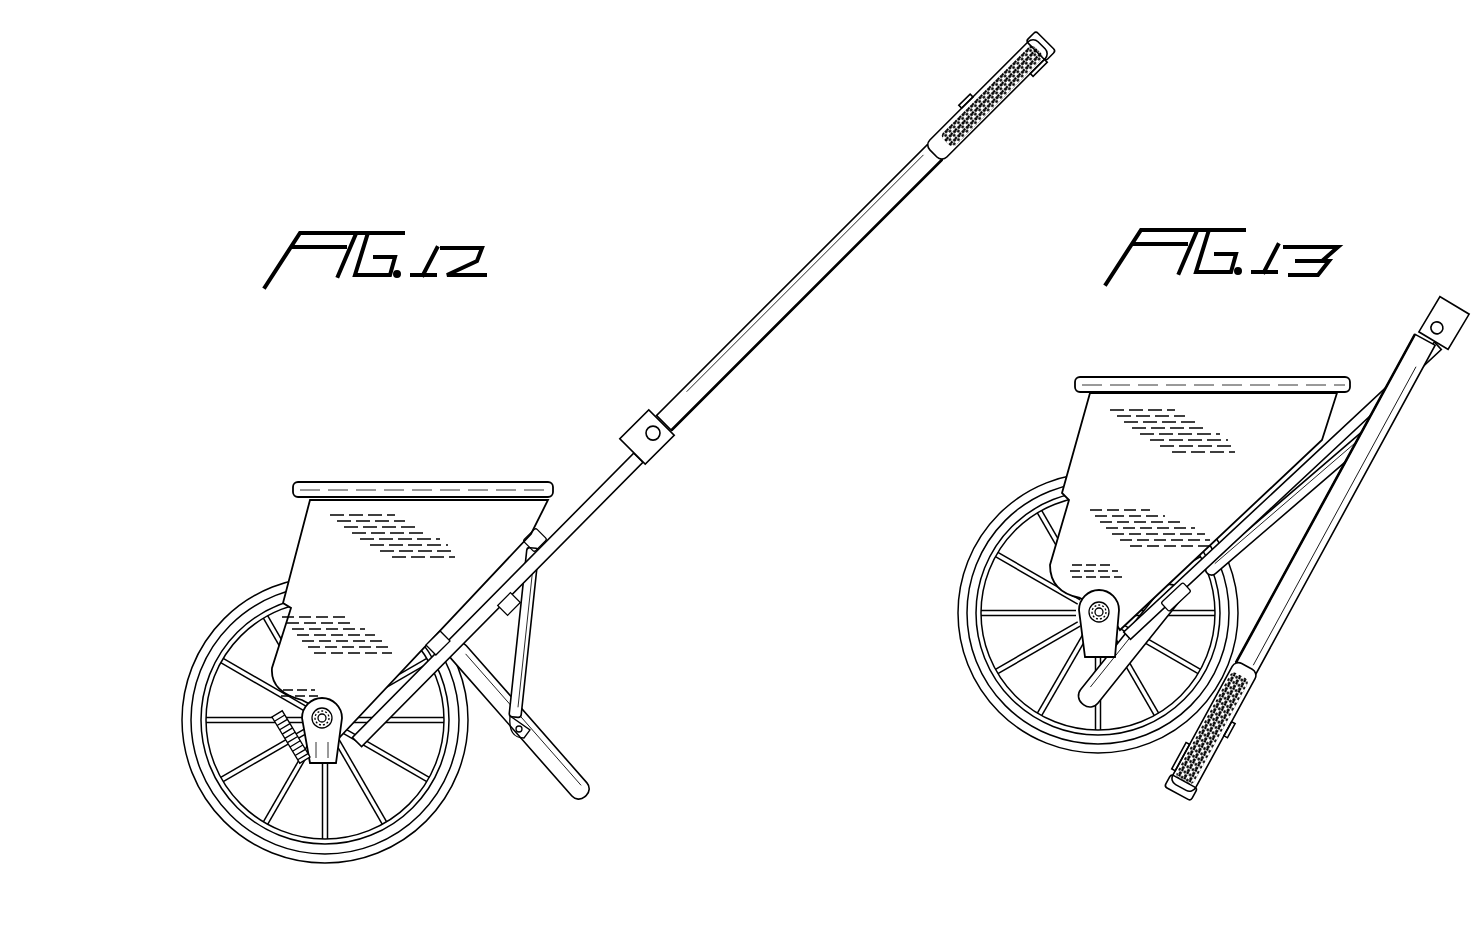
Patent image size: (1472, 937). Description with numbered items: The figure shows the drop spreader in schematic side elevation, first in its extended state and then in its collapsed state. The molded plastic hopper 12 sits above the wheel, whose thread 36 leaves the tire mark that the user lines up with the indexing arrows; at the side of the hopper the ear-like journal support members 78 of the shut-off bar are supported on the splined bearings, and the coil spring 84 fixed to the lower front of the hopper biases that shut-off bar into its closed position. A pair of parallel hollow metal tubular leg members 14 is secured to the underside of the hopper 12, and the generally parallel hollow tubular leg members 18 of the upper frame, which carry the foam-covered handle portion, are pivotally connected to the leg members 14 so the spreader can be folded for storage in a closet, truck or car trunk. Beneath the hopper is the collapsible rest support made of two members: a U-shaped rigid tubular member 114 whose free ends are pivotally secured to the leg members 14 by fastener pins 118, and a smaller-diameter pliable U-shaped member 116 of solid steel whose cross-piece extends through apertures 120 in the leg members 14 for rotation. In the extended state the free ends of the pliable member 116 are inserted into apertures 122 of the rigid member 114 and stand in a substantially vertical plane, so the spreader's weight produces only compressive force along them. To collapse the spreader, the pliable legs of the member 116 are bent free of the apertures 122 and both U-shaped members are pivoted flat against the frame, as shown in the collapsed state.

In FIG. 12, the hopper 12 is at (346, 592).
In FIG. 13, the hopper 12 is at (1128, 484).
In FIG. 12, the leg members 14 is at (613, 458).
In FIG. 13, the leg members 14 is at (1360, 390).
In FIG. 12, the leg members 18 is at (778, 302).
In FIG. 13, the leg members 18 is at (1382, 440).
In FIG. 13, the thread 36 is at (1010, 585).
In FIG. 12, the journal support members 78 is at (304, 764).
In FIG. 13, the journal support members 78 is at (1088, 660).
In FIG. 12, the coil spring 84 is at (277, 716).
In FIG. 12, the rigid U-shaped tubular member 114 is at (563, 778).
In FIG. 13, the rigid U-shaped tubular member 114 is at (1098, 702).
In FIG. 12, the pliable U-shaped tubular member 116 is at (531, 626).
In FIG. 13, the pliable U-shaped tubular member 116 is at (1262, 514).
In FIG. 12, the fastener pins 118 is at (434, 636).
In FIG. 13, the fastener pins 118 is at (1262, 612).
In FIG. 12, the apertures 120 is at (536, 532).
In FIG. 12, the apertures 122 is at (528, 733).